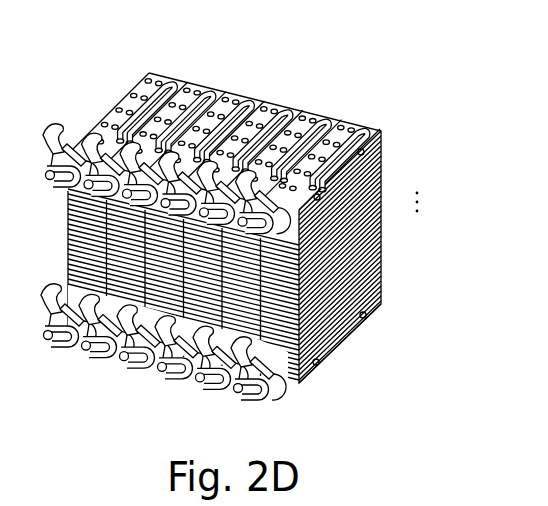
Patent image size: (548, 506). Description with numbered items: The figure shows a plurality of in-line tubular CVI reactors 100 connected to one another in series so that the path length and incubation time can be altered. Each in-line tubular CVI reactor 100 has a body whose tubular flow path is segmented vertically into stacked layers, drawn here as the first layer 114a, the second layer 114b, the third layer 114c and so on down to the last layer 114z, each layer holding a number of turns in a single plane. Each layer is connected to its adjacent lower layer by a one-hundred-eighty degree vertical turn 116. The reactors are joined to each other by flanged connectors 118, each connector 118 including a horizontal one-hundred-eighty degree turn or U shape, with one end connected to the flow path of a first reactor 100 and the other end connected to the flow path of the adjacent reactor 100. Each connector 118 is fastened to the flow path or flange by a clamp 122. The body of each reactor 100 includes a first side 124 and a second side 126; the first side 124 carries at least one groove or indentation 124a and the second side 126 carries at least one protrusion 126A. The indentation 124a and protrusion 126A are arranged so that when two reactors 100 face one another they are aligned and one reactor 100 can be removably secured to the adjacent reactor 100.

The in-line tubular CVI reactor 100 is at (172, 70).
The first layer 114a is at (381, 133).
The second layer 114b is at (379, 148).
The third layer 114c is at (369, 165).
The last layer 114z is at (369, 313).
The 180° vertical turn 116 is at (68, 190).
The flanged connector 118 is at (182, 381).
The clamp 122 is at (267, 396).
The first side 124 is at (382, 271).
The indentation 124a is at (320, 198).
The second side 126 is at (68, 245).
The protrusion 126A is at (83, 133).